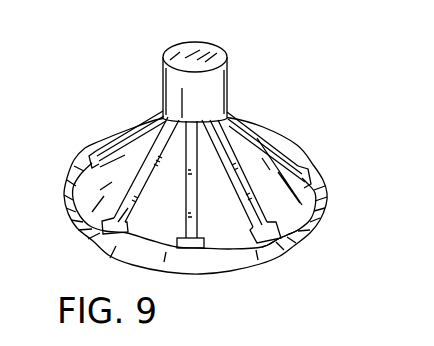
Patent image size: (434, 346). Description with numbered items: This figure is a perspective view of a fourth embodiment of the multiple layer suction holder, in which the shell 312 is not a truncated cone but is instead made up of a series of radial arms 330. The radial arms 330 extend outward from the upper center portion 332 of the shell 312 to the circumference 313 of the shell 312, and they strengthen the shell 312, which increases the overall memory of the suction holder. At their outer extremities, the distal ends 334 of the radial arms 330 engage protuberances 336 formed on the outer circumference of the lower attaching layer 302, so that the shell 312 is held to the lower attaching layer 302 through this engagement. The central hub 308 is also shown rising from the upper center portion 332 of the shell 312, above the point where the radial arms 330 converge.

The lower attaching layer 302 is at (324, 194).
The central hub cylinder 308 is at (218, 52).
The shell 312 is at (132, 124).
The circumference 313 is at (110, 143).
The radial arms 330 is at (255, 138).
The upper center portion 332 is at (224, 96).
The distal ends 334 is at (300, 239).
The protuberances 336 is at (277, 238).